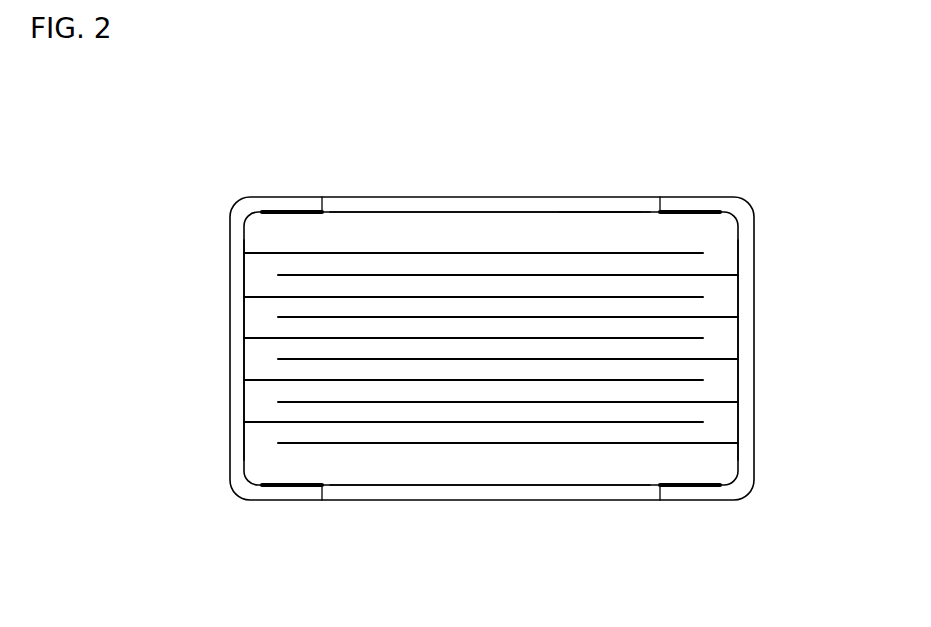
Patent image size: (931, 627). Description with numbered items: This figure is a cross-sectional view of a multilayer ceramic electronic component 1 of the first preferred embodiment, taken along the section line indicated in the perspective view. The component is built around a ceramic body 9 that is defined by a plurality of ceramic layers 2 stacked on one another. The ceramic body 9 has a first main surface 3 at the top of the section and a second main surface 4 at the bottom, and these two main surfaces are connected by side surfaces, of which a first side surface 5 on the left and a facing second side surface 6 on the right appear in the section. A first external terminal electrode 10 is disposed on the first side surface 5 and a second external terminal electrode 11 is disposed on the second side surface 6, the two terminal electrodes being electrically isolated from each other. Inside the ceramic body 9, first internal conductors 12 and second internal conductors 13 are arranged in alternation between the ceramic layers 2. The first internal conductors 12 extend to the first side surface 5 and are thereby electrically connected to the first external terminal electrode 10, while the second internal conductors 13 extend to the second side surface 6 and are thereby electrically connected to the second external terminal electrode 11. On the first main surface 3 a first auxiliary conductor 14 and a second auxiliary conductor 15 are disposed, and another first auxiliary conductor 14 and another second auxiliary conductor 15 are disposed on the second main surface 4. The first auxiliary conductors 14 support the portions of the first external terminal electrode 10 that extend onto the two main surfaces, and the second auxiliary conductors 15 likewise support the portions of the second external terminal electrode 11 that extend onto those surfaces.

The multilayer ceramic electronic component 1 is at (132, 117).
The ceramic layers 2 is at (500, 283).
The first main surface 3 is at (553, 210).
The second main surface 4 is at (485, 487).
The first side surface 5 is at (244, 393).
The second side surface 6 is at (740, 301).
The ceramic body 9 is at (596, 211).
The first external terminal electrode 10 is at (230, 275).
The second external terminal electrode 11 is at (754, 237).
The first internal conductors 12 is at (408, 297).
The second internal conductors 13 is at (613, 403).
The first auxiliary conductor 14 is at (283, 210).
The second auxiliary conductor 15 is at (687, 210).